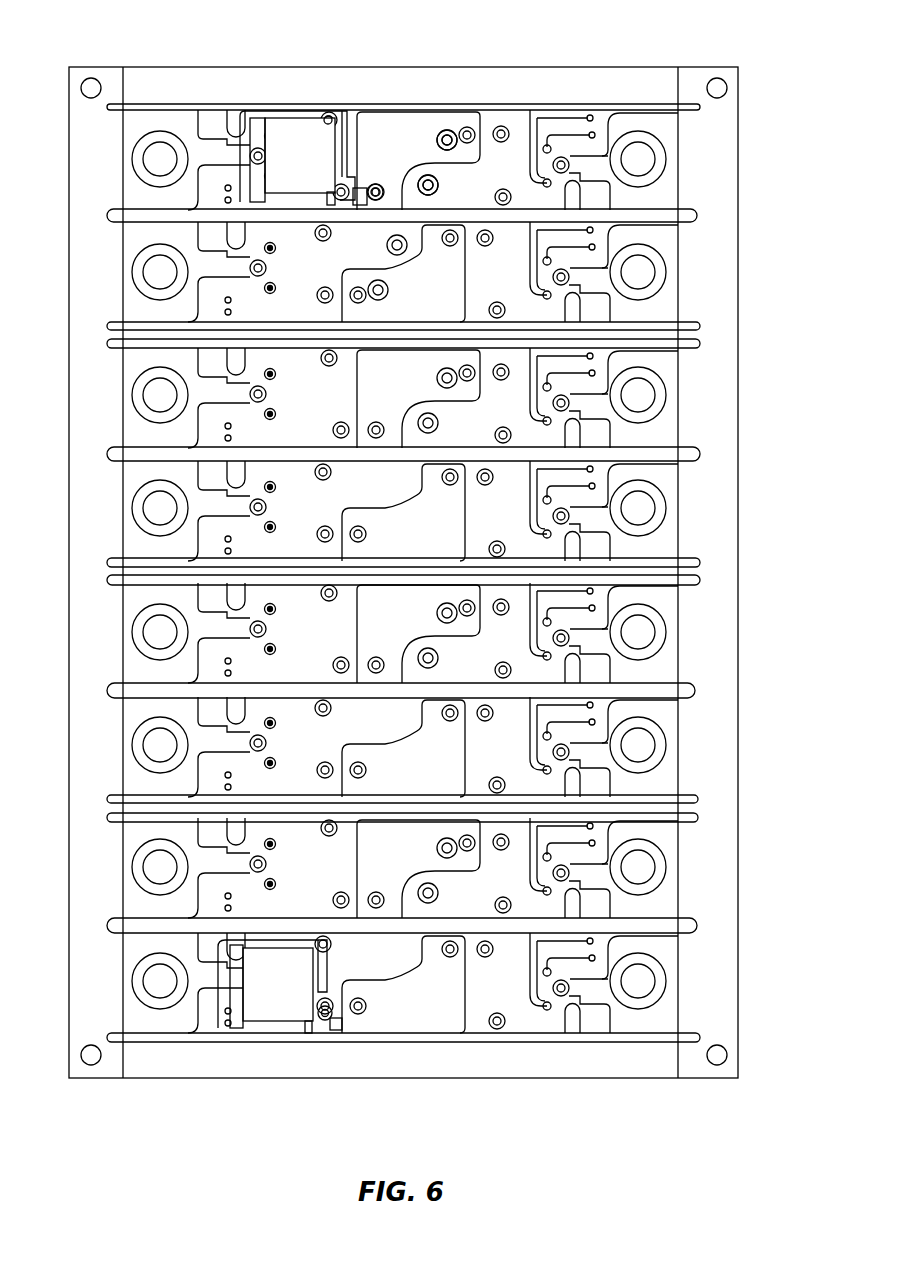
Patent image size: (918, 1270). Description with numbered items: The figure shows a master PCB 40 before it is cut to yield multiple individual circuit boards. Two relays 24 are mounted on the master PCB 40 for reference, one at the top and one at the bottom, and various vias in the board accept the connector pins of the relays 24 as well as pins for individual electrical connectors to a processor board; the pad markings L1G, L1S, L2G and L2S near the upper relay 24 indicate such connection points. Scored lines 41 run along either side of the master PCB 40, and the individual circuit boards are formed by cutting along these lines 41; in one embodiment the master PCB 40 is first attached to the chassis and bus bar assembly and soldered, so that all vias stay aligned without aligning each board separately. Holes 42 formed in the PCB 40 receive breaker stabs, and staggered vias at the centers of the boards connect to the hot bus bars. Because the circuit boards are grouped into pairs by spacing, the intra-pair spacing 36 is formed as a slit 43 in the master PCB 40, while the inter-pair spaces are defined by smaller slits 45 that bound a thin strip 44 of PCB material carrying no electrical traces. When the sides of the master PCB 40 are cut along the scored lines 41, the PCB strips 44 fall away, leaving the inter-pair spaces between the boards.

The relay 24 is at (312, 166).
The intra-pair spacing 36 is at (700, 923).
The master PCB 40 is at (598, 87).
The scored lines 41 is at (122, 82).
The holes 42 is at (645, 270).
The slit 43 is at (645, 455).
The thin strip 44 is at (643, 337).
The smaller slits 45 is at (643, 583).
The line 1 ground contact L1G is at (426, 176).
The line 1 signal contact L1S is at (447, 128).
The line 2 ground contact L2G is at (377, 280).
The line 2 signal contact L2S is at (396, 235).